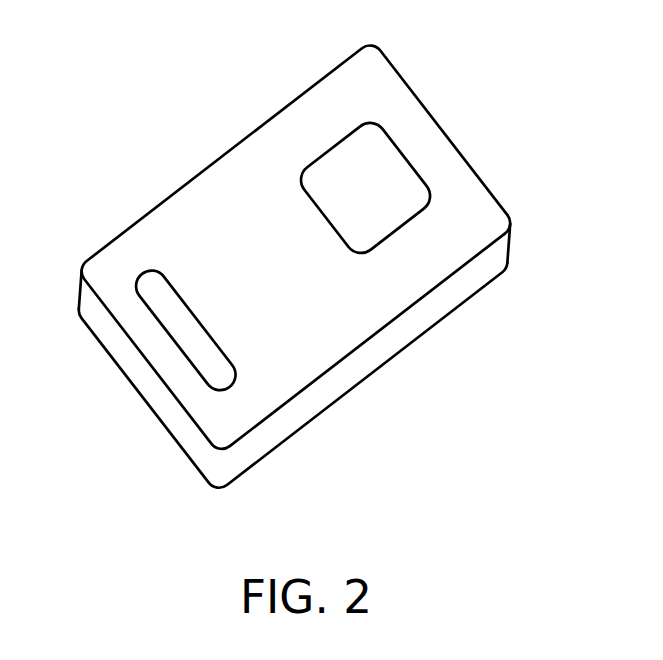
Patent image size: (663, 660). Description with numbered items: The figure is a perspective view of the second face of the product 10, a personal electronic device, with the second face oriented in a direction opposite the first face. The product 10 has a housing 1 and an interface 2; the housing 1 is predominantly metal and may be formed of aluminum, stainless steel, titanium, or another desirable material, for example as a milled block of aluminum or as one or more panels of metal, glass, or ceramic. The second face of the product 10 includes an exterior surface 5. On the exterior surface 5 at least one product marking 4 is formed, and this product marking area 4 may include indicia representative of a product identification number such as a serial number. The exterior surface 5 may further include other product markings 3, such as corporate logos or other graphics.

The product 10 is at (317, 255).
The housing 1 is at (317, 263).
The interface 2 is at (436, 345).
The product markings 3 is at (389, 131).
The product marking 4 is at (218, 343).
The exterior surface 5 is at (456, 233).